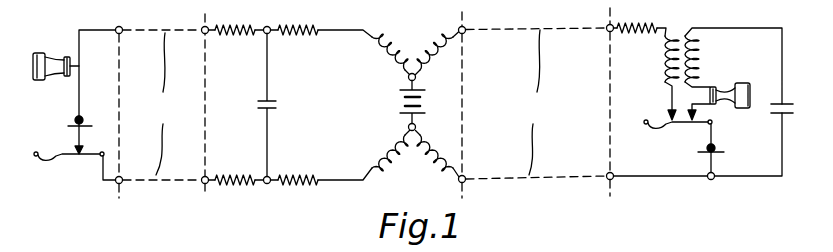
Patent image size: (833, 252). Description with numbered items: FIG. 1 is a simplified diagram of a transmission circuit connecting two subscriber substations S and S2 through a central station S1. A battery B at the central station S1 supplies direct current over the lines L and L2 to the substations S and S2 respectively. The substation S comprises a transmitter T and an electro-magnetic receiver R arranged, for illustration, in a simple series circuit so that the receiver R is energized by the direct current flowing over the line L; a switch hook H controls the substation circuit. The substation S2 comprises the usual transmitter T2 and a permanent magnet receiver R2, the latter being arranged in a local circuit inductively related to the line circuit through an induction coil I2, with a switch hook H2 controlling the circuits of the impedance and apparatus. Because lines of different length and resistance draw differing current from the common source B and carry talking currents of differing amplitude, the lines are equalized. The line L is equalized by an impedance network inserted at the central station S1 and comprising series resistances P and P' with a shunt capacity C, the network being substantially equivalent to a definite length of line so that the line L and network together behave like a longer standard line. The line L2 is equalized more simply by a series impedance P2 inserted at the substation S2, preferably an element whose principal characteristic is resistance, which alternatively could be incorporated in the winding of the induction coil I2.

The substation S is at (114, 99).
The electro-magnetic receiver R is at (83, 66).
The transmitter T is at (84, 118).
The switch hook H is at (64, 162).
The line L is at (160, 104).
The series resistance P is at (264, 17).
The shunt capacity C is at (277, 106).
The series resistance P' is at (264, 198).
The central station S1 is at (434, 99).
The battery B is at (426, 106).
The line L2 is at (542, 102).
The substation S2 is at (653, 98).
The series impedance P2 is at (636, 37).
The induction coil I2 is at (697, 55).
The permanent magnet receiver R2 is at (735, 85).
The switch hook H2 is at (677, 126).
The transmitter T2 is at (717, 149).